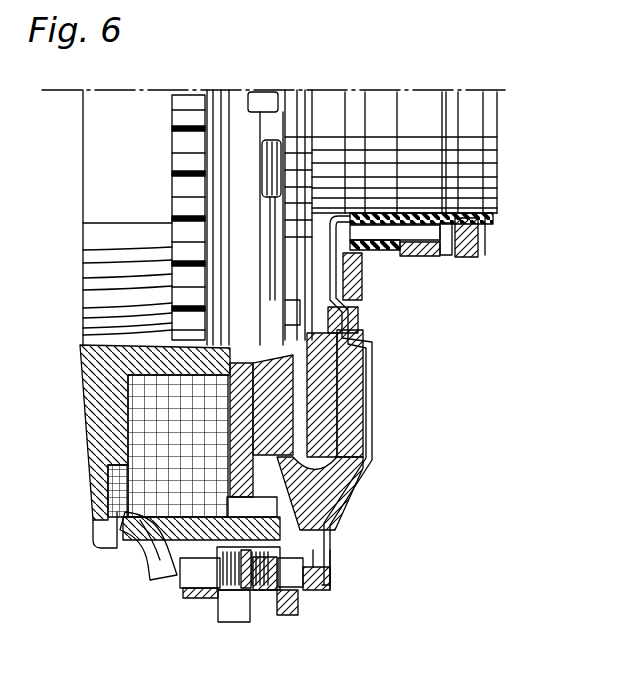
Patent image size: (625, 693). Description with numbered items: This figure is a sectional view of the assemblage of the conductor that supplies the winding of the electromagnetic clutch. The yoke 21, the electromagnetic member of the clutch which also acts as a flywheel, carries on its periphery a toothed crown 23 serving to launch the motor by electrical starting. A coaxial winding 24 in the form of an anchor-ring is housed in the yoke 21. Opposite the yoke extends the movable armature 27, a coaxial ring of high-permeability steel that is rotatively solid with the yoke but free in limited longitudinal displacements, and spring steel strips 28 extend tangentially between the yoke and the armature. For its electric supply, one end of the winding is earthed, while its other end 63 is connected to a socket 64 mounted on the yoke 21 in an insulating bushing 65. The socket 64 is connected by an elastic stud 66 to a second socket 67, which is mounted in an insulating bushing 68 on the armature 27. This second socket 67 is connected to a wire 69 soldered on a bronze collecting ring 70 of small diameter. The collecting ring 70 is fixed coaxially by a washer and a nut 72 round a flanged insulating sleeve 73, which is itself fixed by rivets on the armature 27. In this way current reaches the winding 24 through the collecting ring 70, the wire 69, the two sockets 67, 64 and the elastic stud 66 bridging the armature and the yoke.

The yoke 21 is at (92, 367).
The toothed crown 23 is at (182, 188).
The winding 24 is at (137, 428).
The movable armature 27 is at (344, 452).
The strips 28 is at (274, 226).
The winding end 63 is at (132, 540).
The socket 64 is at (182, 578).
The insulating bushing 65 is at (195, 600).
The elastic stud 66 is at (234, 585).
The second socket 67 is at (284, 614).
The insulating bushing 68 is at (302, 598).
The wire 69 is at (368, 383).
The collecting ring 70 is at (406, 252).
The nut 72 is at (468, 250).
The flanged insulating sleeve 73 is at (388, 234).